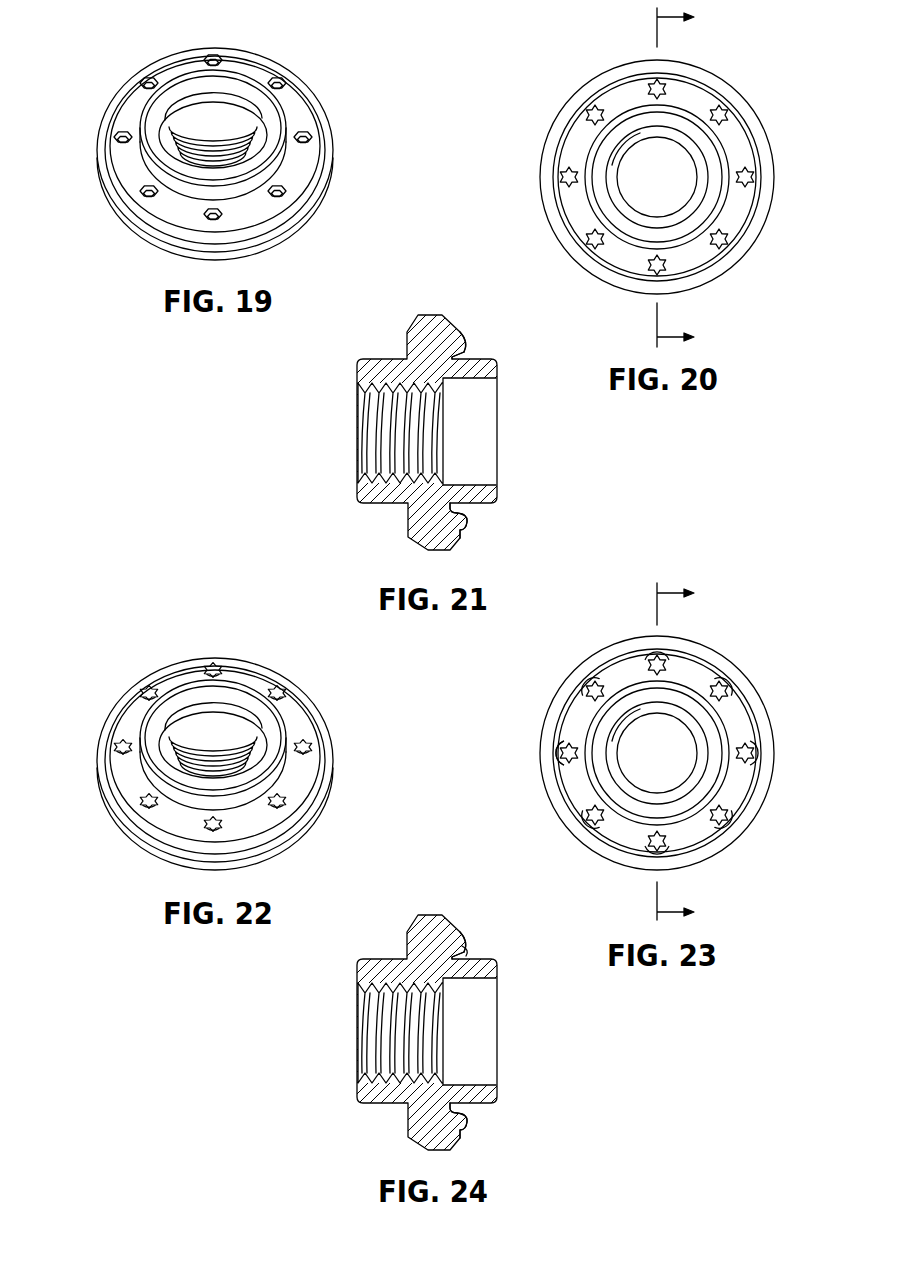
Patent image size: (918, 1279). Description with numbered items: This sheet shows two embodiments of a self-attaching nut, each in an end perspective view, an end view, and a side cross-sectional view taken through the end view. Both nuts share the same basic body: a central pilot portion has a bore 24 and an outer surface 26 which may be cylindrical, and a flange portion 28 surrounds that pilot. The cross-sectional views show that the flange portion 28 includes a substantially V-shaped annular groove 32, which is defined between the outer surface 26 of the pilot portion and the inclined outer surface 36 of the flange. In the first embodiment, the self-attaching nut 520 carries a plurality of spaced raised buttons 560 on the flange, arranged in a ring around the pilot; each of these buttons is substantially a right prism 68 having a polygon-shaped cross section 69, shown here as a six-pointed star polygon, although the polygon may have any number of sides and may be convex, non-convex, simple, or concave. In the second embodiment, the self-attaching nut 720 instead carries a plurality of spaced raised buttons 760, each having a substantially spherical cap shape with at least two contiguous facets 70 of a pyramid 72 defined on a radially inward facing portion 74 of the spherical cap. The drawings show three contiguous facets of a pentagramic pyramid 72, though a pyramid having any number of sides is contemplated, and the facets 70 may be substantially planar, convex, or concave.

In FIG. 19, the bore 24 is at (176, 95).
In FIG. 22, the bore 24 is at (176, 705).
In FIG. 19, the outer surface 26 is at (286, 111).
In FIG. 21, the outer surface 26 is at (477, 505).
In FIG. 22, the outer surface 26 is at (286, 721).
In FIG. 24, the outer surface 26 is at (477, 1104).
In FIG. 21, the flange portion 28 is at (432, 306).
In FIG. 24, the flange portion 28 is at (432, 906).
In FIG. 19, the annular groove 32 is at (294, 160).
In FIG. 21, the annular groove 32 is at (464, 353).
In FIG. 22, the annular groove 32 is at (294, 770).
In FIG. 24, the annular groove 32 is at (464, 957).
In FIG. 21, the inclined outer surface 36 is at (458, 332).
In FIG. 24, the inclined outer surface 36 is at (460, 934).
In FIG. 19, the right prism 68 is at (147, 191).
In FIG. 20, the polygon-shaped cross section 69 is at (590, 238).
In FIG. 23, the contiguous facets 70 is at (600, 692).
In FIG. 23, the pyramid 72 is at (569, 775).
In FIG. 24, the radially inward facing portion 74 is at (465, 948).
In FIG. 19, the self-attaching nut 520 is at (288, 55).
In FIG. 19, the spaced raised buttons 560 is at (122, 136).
In FIG. 20, the spaced raised buttons 560 is at (565, 172).
In FIG. 22, the self-attaching nut 720 is at (288, 665).
In FIG. 22, the spaced raised buttons 760 is at (118, 745).
In FIG. 23, the spaced raised buttons 760 is at (590, 818).